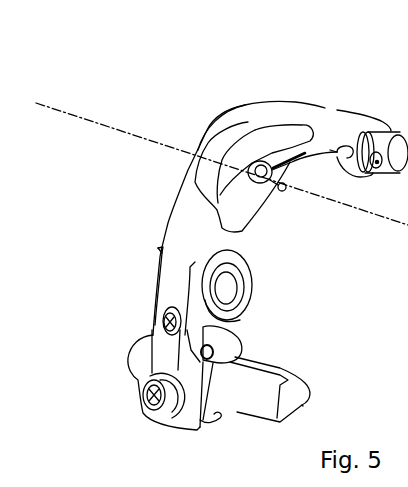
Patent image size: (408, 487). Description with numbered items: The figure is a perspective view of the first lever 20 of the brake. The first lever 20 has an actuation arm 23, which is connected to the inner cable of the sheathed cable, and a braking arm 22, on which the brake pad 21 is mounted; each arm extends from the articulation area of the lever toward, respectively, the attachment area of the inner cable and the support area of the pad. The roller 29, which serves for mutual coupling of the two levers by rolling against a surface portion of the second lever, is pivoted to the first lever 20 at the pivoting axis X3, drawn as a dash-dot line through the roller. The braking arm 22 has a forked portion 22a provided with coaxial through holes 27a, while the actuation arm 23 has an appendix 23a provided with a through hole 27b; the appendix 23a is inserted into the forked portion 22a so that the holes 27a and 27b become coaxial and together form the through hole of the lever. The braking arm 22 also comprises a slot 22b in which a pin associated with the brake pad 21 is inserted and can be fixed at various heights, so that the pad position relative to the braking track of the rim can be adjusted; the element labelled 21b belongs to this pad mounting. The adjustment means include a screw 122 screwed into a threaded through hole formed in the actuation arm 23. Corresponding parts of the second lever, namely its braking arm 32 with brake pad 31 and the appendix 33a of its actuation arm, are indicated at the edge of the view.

The first lever 20 is at (233, 87).
The actuation arm 23 is at (294, 107).
The roller 29 is at (263, 170).
The pivoting axis X3 is at (222, 152).
The appendix 23a is at (168, 289).
The screw 122 is at (162, 323).
The braking arm 22 is at (172, 358).
The through hole 27b is at (232, 268).
The through holes 27a is at (222, 295).
The forked portion 22a is at (217, 326).
The braking arm 32 is at (382, 207).
The appendix 33a is at (369, 232).
The brake pad 21 is at (304, 396).
The brake pad 31 is at (407, 398).
The pad pivot pin 21b is at (218, 412).
The slot 22b is at (207, 415).